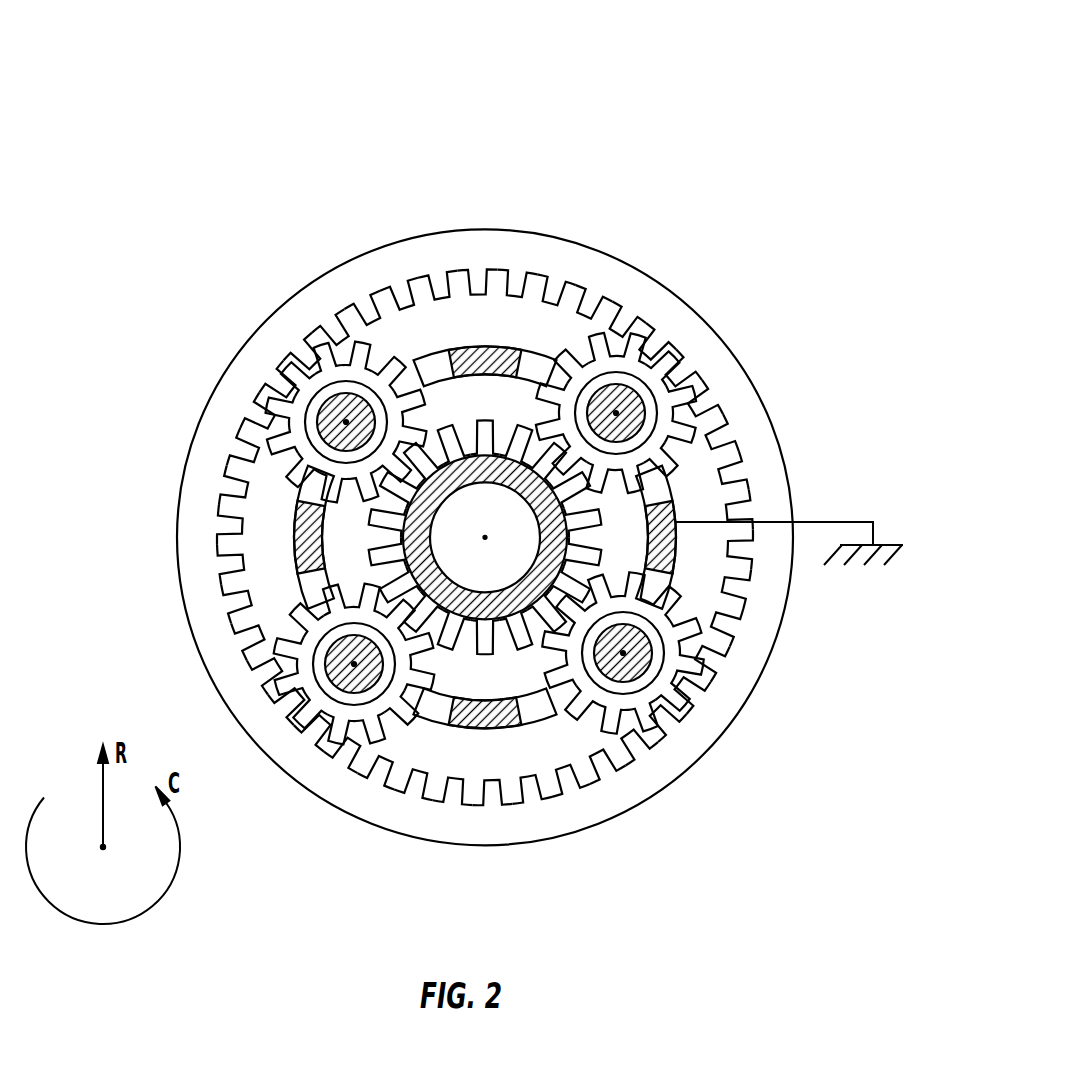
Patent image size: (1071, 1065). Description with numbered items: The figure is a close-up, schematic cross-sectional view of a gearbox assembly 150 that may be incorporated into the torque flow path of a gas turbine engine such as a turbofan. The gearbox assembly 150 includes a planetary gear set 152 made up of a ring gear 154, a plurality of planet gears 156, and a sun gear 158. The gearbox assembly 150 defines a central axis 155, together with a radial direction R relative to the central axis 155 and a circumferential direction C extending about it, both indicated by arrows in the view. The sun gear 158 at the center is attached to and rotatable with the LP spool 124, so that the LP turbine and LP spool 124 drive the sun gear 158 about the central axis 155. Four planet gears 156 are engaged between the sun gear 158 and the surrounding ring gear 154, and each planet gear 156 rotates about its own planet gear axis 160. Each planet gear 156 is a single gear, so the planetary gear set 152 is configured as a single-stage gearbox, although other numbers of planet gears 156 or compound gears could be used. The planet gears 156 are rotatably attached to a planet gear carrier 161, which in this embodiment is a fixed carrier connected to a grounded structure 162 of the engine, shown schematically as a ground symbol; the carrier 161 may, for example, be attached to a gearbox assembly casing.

The gearbox assembly 150 is at (692, 128).
The planetary gear set 152 is at (817, 293).
The ring gear 154 is at (458, 245).
The central axis 155 is at (485, 537).
The planet gears 156 is at (672, 400).
The sun gear 158 is at (587, 518).
The planet gear axis 160 is at (616, 413).
The planet gear carrier 161 is at (670, 552).
The grounded structure 162 is at (882, 543).
The LP spool 124 is at (502, 608).